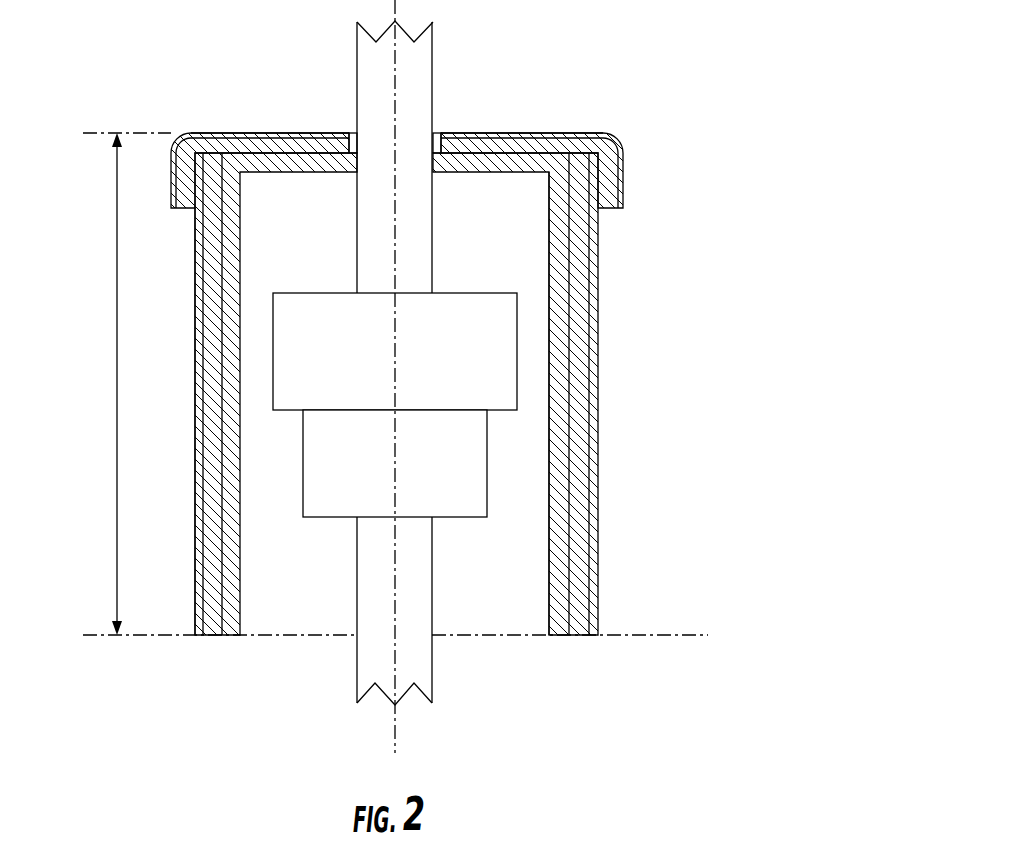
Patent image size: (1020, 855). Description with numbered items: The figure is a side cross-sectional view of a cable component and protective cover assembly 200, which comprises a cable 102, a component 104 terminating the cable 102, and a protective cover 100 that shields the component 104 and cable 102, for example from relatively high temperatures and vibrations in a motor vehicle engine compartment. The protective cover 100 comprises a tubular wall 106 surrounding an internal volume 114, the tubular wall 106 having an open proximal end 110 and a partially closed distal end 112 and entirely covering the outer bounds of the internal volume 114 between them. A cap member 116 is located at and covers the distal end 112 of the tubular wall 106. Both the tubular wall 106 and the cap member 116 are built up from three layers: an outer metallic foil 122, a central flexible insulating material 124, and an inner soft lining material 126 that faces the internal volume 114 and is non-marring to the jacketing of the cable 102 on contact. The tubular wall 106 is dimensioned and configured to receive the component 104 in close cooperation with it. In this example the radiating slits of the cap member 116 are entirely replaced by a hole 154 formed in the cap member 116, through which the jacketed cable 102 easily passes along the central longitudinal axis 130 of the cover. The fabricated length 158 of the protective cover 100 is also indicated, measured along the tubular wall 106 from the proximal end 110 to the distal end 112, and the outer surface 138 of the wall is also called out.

The protective cover 100 is at (670, 287).
The cable 102 is at (433, 101).
The component 104 is at (473, 363).
The tubular wall 106 is at (444, 468).
The proximal end 110 is at (626, 620).
The distal end 112 is at (640, 118).
The internal volume 114 is at (323, 248).
The cap member 116 is at (505, 133).
The outer metallic foil 122 is at (598, 577).
The central flexible insulating material 124 is at (580, 636).
The inner soft lining material 126 is at (558, 636).
The central longitudinal axis 130 is at (356, 657).
The outer surface of housing wall 138 is at (195, 283).
The hole 154 is at (353, 133).
The fabricated length 158 is at (117, 286).
The cable component and protective cover assembly 200 is at (640, 77).